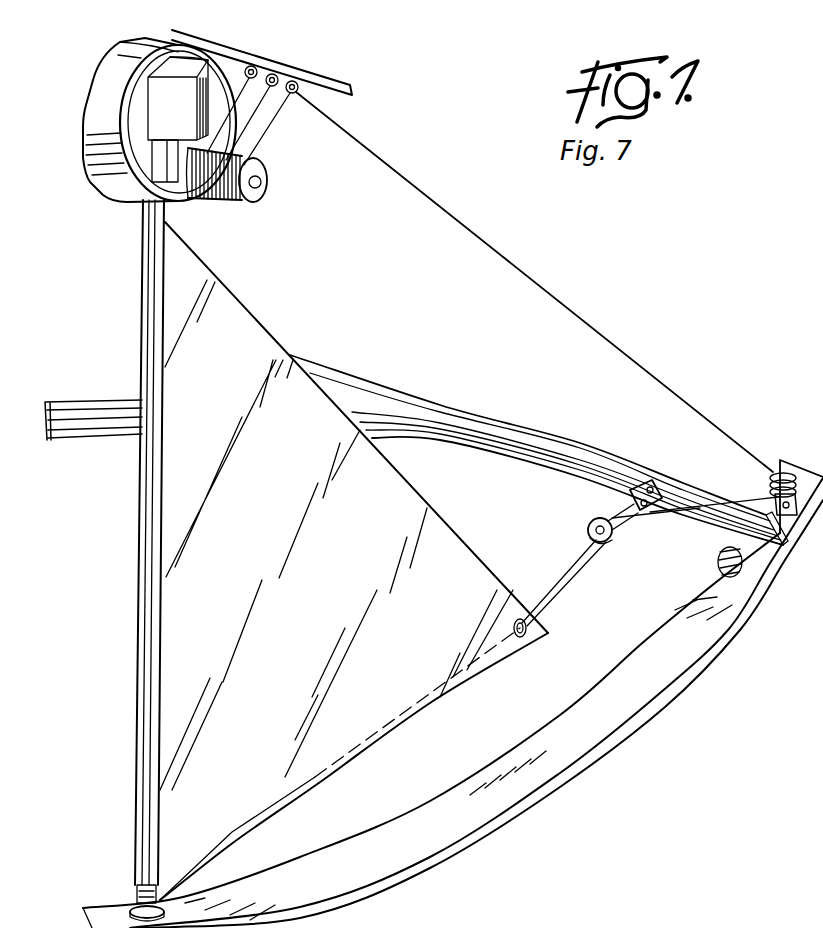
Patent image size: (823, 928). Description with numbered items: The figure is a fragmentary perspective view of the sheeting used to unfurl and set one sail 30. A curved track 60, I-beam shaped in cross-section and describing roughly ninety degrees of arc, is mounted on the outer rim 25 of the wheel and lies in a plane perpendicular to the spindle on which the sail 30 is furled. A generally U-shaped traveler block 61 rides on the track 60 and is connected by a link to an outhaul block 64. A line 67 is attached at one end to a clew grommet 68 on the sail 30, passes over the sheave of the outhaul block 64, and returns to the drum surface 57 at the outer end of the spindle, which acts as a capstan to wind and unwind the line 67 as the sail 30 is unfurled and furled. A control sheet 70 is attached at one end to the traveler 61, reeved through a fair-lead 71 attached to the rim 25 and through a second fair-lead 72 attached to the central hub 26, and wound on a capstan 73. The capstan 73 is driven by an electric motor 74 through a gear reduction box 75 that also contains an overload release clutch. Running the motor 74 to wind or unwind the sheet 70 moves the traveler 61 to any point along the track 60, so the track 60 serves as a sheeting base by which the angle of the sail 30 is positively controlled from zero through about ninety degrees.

The outer rim 25 is at (407, 843).
The central hub 26 is at (100, 165).
The sail 30 is at (347, 622).
The drum surface 57 is at (136, 895).
The track 60 is at (508, 447).
The traveler block 61 is at (642, 483).
The outhaul block 64 is at (592, 524).
The line 67 is at (284, 800).
The clew grommet 68 is at (520, 637).
The control sheet 70 is at (543, 285).
The fair-lead 71 is at (796, 472).
The second fair-lead 72 is at (292, 94).
The capstan 73 is at (268, 186).
The electric motor 74 is at (188, 93).
The gear reduction box 75 is at (160, 164).